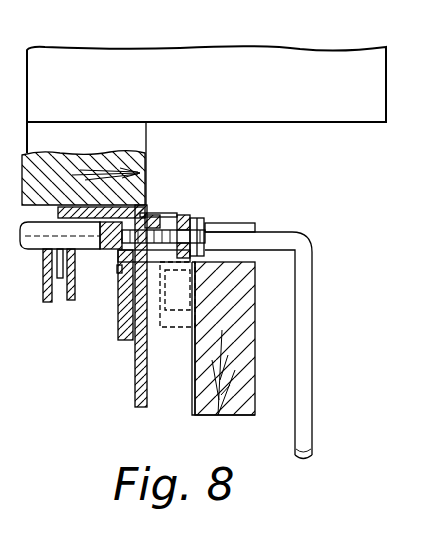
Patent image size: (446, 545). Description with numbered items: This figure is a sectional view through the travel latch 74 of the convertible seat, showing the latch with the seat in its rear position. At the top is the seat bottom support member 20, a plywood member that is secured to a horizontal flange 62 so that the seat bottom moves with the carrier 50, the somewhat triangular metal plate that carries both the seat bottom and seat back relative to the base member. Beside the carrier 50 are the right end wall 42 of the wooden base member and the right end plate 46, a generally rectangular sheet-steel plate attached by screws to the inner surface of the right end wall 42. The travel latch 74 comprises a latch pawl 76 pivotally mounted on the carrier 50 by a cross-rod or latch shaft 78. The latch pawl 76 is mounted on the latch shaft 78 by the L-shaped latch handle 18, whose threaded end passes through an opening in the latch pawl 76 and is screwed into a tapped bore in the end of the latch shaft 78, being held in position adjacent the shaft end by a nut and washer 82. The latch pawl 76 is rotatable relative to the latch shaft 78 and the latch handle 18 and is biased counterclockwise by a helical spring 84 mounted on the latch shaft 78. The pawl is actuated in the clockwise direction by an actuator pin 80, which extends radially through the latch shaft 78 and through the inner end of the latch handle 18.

The latch handle 18 is at (306, 420).
The seat bottom support member 20 is at (100, 128).
The right end wall 42 is at (247, 343).
The right end plate 46 is at (186, 388).
The carrier 50 is at (135, 385).
The horizontal flange 62 is at (70, 204).
The travel latch 74 is at (196, 187).
The latch pawl 76 is at (190, 217).
The latch shaft 78 is at (78, 250).
The actuator pin 80 is at (124, 292).
The nut and washer 82 is at (208, 218).
The helical spring 84 is at (165, 217).